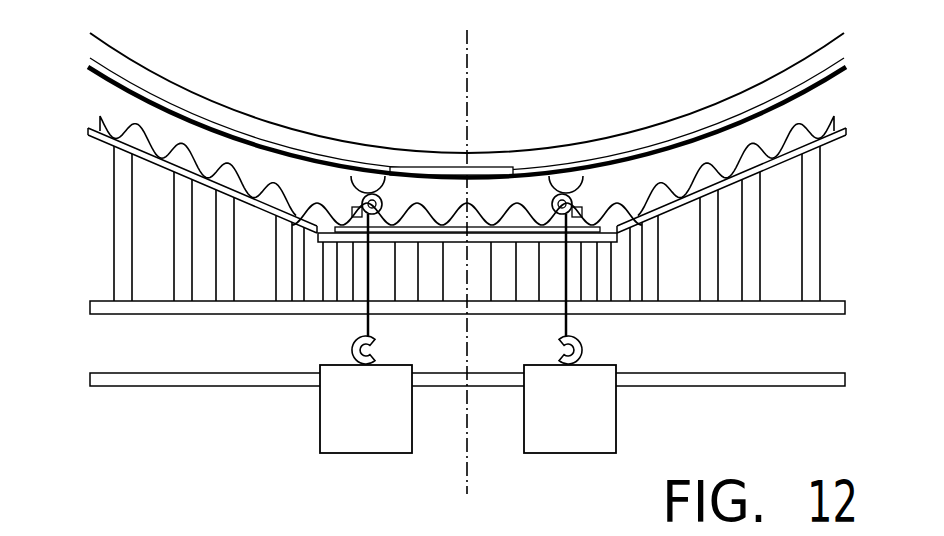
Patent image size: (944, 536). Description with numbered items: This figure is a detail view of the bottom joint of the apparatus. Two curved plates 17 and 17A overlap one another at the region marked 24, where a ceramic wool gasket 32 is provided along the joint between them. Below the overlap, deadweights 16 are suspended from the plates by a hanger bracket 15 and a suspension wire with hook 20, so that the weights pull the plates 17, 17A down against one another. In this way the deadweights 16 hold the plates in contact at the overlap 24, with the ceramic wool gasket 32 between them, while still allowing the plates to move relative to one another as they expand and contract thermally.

The hanger bracket 15 is at (352, 209).
The deadweights 16 is at (330, 418).
The plate 17 is at (240, 133).
The plate 17A is at (728, 116).
The suspension wire with hook 20 is at (362, 326).
The overlap of the plates 24 is at (453, 166).
The ceramic wool gasket 32 is at (472, 92).